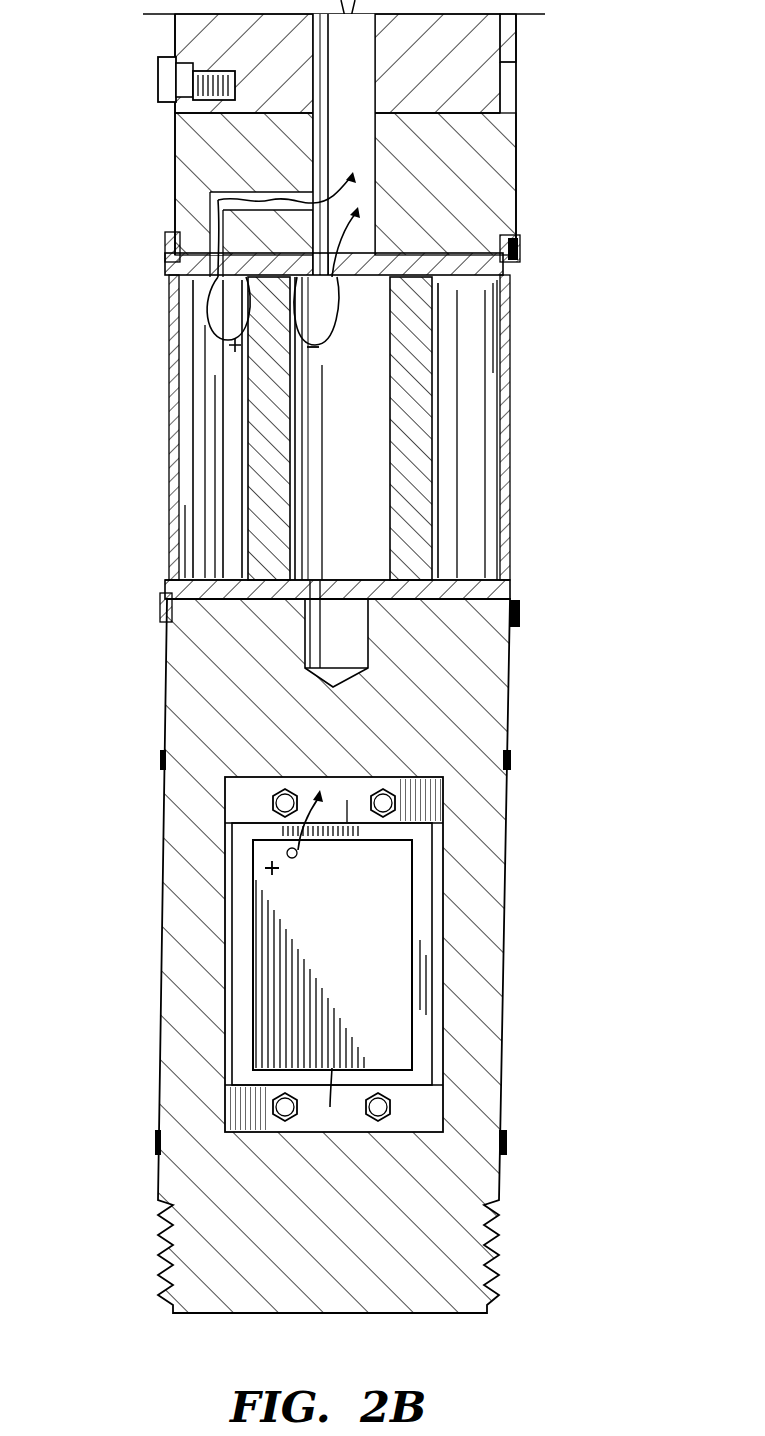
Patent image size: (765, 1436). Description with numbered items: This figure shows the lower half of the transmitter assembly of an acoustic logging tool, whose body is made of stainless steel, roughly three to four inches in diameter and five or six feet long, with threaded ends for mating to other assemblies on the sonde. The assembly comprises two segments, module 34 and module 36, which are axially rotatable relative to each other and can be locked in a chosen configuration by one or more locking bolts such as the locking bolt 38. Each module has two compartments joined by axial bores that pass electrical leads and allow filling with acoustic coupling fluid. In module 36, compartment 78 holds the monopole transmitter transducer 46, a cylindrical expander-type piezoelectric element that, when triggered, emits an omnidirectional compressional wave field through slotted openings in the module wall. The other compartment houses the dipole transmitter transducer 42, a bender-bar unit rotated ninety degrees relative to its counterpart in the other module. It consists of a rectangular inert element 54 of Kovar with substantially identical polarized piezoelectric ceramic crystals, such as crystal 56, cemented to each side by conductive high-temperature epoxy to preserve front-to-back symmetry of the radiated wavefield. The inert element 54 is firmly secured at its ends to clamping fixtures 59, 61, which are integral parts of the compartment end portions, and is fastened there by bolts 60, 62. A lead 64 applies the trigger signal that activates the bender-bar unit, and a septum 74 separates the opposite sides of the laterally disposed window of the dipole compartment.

The module 34 is at (518, 45).
The module 36 is at (518, 108).
The locking bolt 38 is at (160, 75).
The compartment 78 is at (213, 353).
The monopole transmitter transducer 46 is at (452, 507).
The septum 74 is at (493, 933).
The dipole transmitter transducer 42 is at (395, 954).
The lead 64 is at (306, 856).
The clamping fixture 61 is at (347, 803).
The bolt 62 is at (383, 805).
The inert element 54 is at (414, 894).
The polarized piezoelectric ceramic crystal 56 is at (372, 954).
The clamping fixture 59 is at (334, 1050).
The bolt 60 is at (378, 1106).